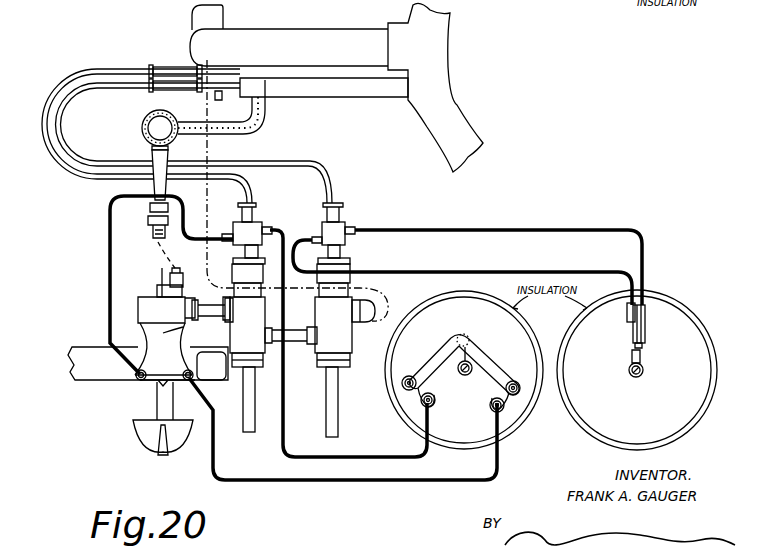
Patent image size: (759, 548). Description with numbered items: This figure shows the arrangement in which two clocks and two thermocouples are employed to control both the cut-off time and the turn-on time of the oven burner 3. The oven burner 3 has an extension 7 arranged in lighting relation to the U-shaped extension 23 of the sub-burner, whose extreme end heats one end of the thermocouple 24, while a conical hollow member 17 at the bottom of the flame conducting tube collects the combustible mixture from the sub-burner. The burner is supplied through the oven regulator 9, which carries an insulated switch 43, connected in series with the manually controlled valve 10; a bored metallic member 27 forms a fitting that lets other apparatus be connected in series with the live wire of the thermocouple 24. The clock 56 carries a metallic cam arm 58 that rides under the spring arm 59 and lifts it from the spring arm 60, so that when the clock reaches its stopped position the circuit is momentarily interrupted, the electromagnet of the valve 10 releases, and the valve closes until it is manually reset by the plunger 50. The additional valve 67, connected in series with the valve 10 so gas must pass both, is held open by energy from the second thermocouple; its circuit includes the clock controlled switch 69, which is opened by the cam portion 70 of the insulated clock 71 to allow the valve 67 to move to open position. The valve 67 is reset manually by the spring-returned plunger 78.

The oven burner 3 is at (432, 146).
The extension 7 is at (335, 95).
The oven regulator 9 is at (148, 394).
The manually controlled valve 10 is at (229, 334).
The conical hollow member 17 is at (142, 130).
The U-shaped extension 23 is at (248, 128).
The thermocouple 24 is at (172, 64).
The metallic member 27 is at (226, 230).
The switch 43 is at (160, 372).
The plunger 50 is at (249, 432).
The clock 56 is at (523, 423).
The cam arm 58 is at (470, 353).
The spring arm 59 is at (426, 362).
The spring arm 60 is at (487, 363).
The valve 67 is at (344, 344).
The clock controlled switch 69 is at (652, 338).
The cam portion 70 is at (630, 357).
The clock 71 is at (698, 422).
The plunger 78 is at (328, 415).